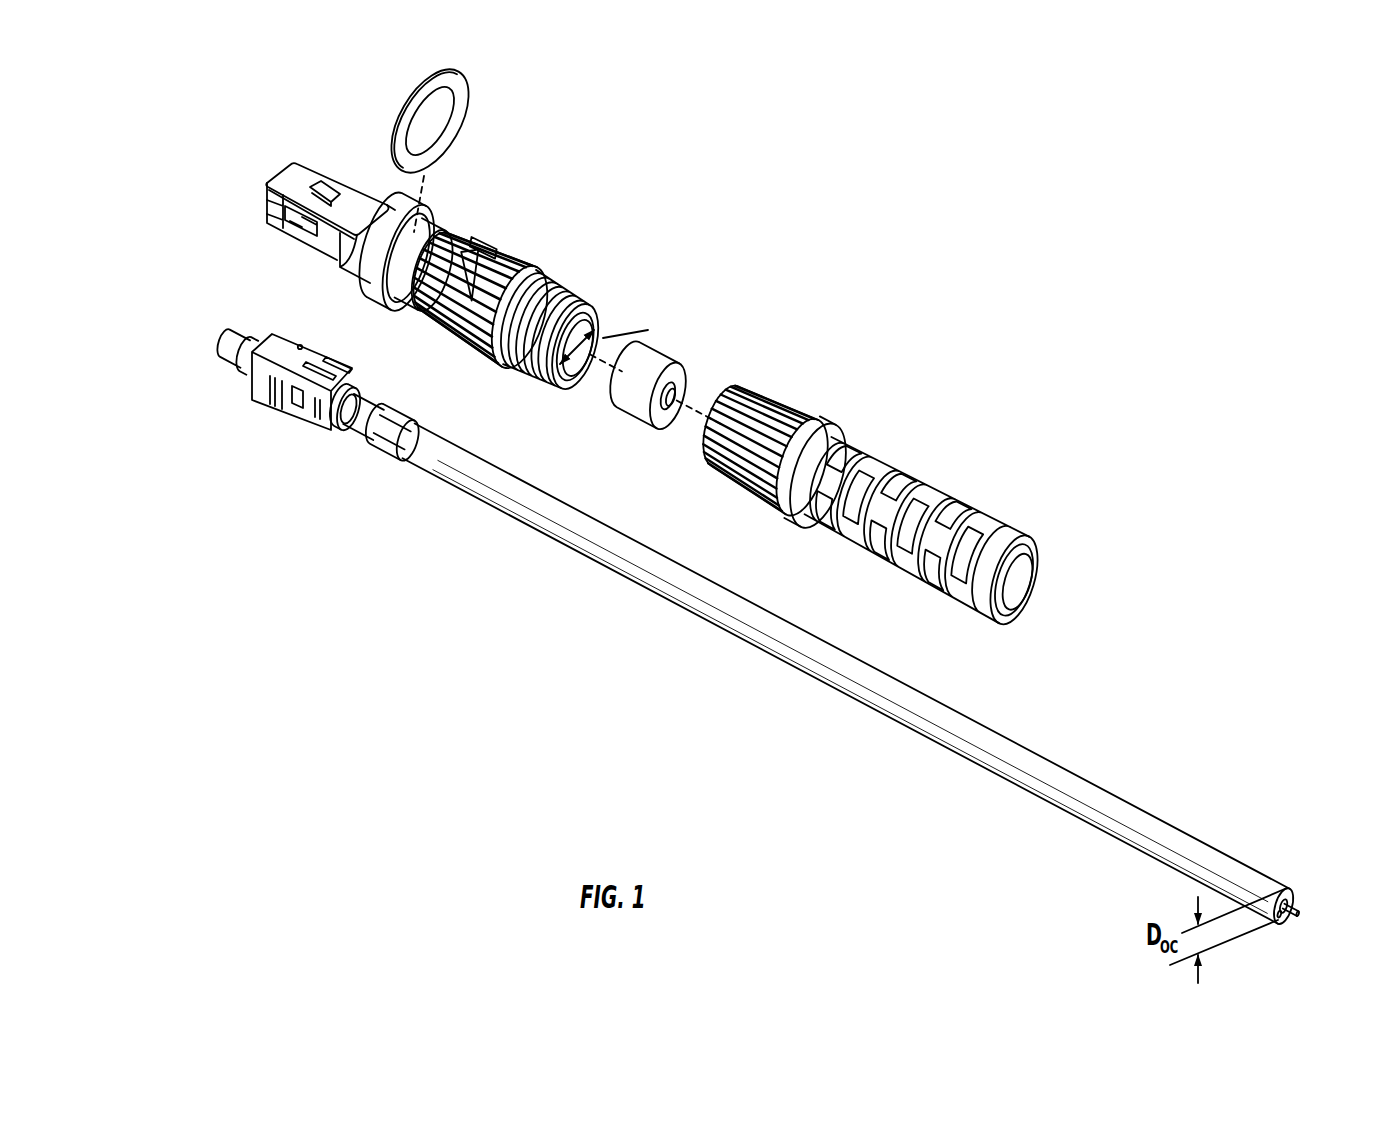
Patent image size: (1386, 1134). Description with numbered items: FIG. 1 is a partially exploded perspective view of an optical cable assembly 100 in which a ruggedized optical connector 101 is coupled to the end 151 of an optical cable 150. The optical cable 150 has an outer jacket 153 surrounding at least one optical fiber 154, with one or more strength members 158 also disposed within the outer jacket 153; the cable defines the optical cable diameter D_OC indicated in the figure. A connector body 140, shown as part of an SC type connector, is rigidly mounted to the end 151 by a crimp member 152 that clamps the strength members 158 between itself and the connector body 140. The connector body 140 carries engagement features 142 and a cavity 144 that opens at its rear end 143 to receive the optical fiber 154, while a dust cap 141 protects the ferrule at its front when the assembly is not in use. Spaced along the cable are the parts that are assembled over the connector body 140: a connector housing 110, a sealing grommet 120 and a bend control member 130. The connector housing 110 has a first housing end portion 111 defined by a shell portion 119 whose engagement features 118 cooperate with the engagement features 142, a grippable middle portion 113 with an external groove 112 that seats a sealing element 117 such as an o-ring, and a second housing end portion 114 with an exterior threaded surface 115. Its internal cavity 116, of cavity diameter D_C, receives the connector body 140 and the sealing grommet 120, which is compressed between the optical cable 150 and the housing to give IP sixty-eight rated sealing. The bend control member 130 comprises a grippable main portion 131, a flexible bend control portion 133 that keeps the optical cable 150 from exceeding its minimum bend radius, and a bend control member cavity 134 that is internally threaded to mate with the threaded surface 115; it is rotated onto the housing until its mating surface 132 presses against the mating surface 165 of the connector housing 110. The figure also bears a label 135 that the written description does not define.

The optical cable assembly 100 is at (853, 283).
The ruggedized optical connector 101 is at (146, 162).
The connector housing 110 is at (230, 240).
The first housing end portion 111 is at (293, 165).
The external groove 112 is at (512, 302).
The middle portion 113 is at (426, 346).
The second housing end portion 114 is at (586, 297).
The exterior threaded surface 115 is at (520, 383).
The internal cavity 116 is at (600, 322).
The sealing element 117 is at (485, 108).
The engagement features 118 is at (268, 214).
The shell portion 119 is at (302, 172).
The sealing grommet 120 is at (690, 350).
The bend control member 130 is at (872, 504).
The main portion 131 is at (754, 462).
The mating surface 132 is at (703, 460).
The flexible bend control portion 133 is at (1010, 513).
The bend control member cavity 134 is at (1018, 584).
The knurled surface 135 is at (795, 412).
The connector body 140 is at (290, 414).
The dust cap 141 is at (237, 376).
The engagement features 142 is at (281, 358).
The rear end 143 is at (340, 431).
The cavity 144 is at (340, 390).
The optical cable 150 is at (891, 691).
The end 151 is at (345, 444).
The crimp member 152 is at (367, 453).
The outer jacket 153 is at (1292, 893).
The optical fiber 154 is at (1300, 906).
The strength members 158 is at (1289, 920).
The mating surface 165 is at (540, 368).